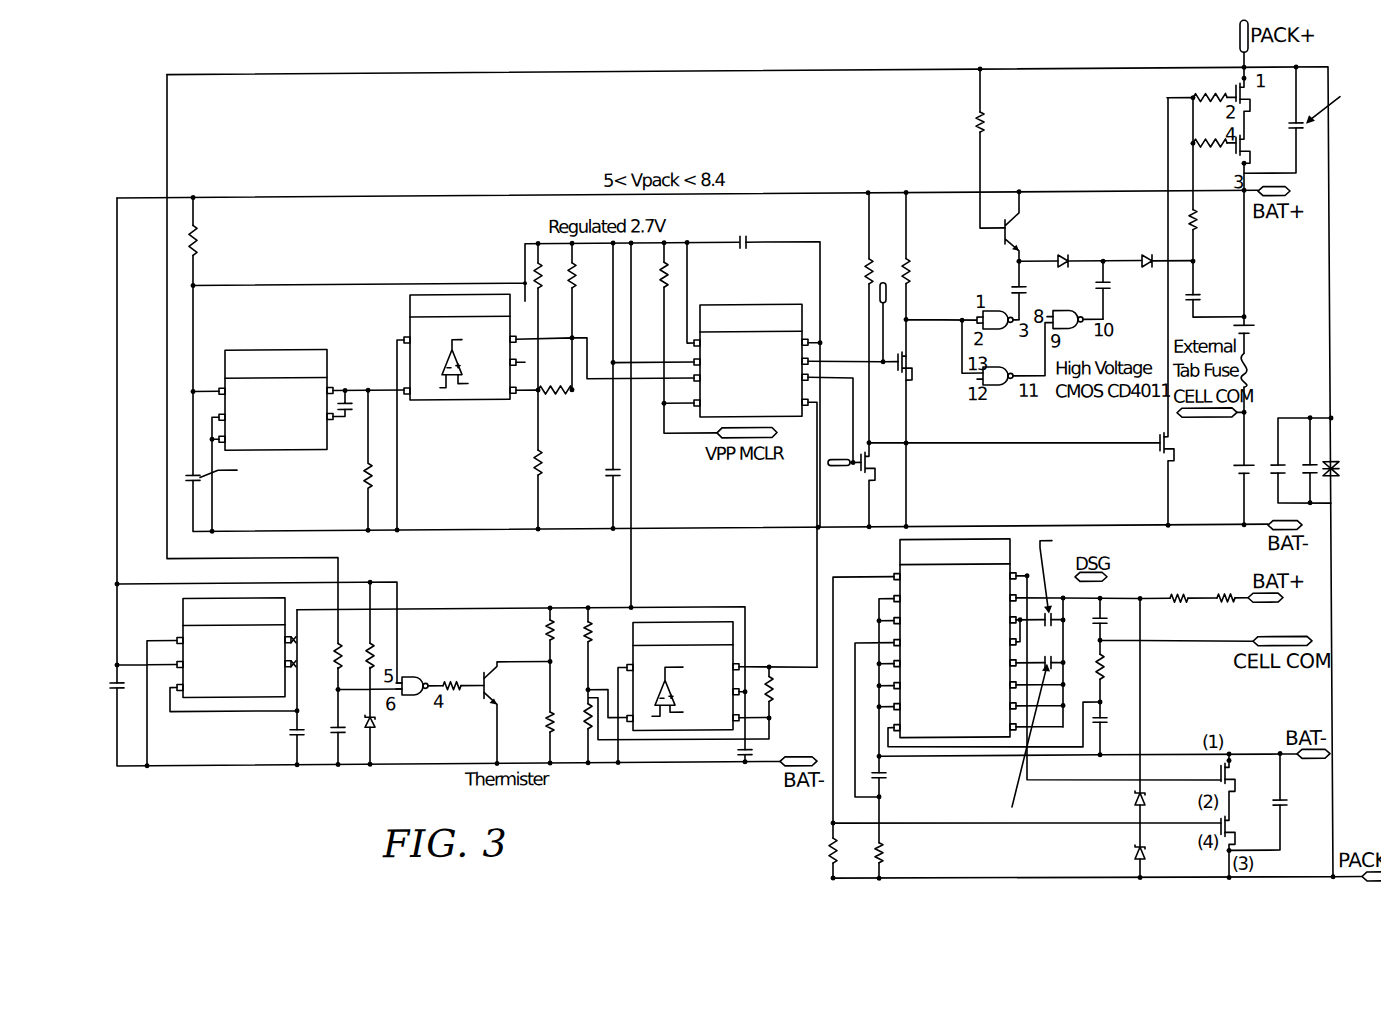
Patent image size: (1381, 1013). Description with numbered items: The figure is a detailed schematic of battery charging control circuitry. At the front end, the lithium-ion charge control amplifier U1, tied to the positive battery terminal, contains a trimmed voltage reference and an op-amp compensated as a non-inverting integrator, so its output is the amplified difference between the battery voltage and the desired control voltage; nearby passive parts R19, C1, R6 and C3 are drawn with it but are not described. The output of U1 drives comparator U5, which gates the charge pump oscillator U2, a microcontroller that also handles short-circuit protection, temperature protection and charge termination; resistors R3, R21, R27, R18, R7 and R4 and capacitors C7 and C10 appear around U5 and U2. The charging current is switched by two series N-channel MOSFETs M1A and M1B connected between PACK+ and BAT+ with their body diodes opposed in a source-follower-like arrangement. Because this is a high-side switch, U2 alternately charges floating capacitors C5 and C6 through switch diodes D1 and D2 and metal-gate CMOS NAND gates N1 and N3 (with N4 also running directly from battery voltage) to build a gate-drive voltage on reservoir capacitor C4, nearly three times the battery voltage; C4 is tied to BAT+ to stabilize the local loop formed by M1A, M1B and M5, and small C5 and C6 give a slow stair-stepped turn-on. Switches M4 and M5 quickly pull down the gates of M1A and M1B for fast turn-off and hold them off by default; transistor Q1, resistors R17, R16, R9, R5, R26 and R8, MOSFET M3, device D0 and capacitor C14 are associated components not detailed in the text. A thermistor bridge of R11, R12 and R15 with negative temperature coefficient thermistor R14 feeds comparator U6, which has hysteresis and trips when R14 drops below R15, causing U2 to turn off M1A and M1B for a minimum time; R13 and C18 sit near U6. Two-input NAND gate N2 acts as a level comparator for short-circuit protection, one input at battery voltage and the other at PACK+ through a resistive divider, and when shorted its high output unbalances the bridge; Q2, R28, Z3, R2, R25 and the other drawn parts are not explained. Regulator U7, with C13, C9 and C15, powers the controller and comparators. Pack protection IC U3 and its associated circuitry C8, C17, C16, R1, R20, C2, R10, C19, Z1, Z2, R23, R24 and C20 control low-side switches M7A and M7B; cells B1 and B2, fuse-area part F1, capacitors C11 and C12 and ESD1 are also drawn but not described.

The resistor R19 100 ohm R19 is at (210, 238).
The charge control amplifier U1 is at (276, 385).
The capacitor C1 0.1uF C1 is at (349, 428).
The resistor R6 10K R6 is at (354, 460).
The capacitor C3 33uF C3 is at (232, 480).
The comparator U5 is at (449, 343).
The resistor R3 680K R3 is at (519, 262).
The resistor R21 100K R21 is at (548, 287).
The resistor R27 39K R27 is at (591, 282).
The resistor R18 100K R18 is at (650, 282).
The resistor R7 220K R7 is at (563, 411).
The resistor R4 330K R4 is at (519, 465).
The capacitor C7 330pF C7 is at (590, 475).
The capacitor C10 0.1uF C10 is at (750, 230).
The charge pump oscillator U2 is at (751, 348).
The resistor R17 1MEG R17 is at (853, 268).
The diode D0 is at (888, 311).
The resistor R16 1MEG R16 is at (930, 267).
The MOSFET M3 BSS138 M3 is at (930, 360).
The switch M4 is at (916, 484).
The switch diode D1 is at (965, 347).
The switch diode D2 is at (1150, 235).
The transistor Q1 2N3904 Q1 is at (1037, 226).
The resistor R9 1MEG R9 is at (1005, 120).
The floating capacitor C5 is at (1048, 290).
The floating capacitor C6 is at (1132, 290).
The NAND gate N1 is at (1001, 331).
The NAND gate N3 is at (1078, 331).
The NAND gate N4 is at (1015, 362).
The resistor R5 10K R5 is at (1204, 86).
The resistor R26 10K R26 is at (1210, 166).
The resistor R8 100K R8 is at (1215, 214).
The N-channel MOSFET M1A is at (1265, 108).
The N-channel MOSFET M1B is at (1264, 155).
The capacitor C14 0.1uF C14 is at (1335, 96).
The reservoir capacitor C4 is at (1222, 288).
The battery cell B1 ICR18650 B1 is at (1281, 326).
The fuse F1 Raychem F1 is at (1284, 372).
The switch M5 is at (1193, 474).
The battery cell B2 ICR18650 B2 is at (1217, 486).
The capacitor C11 1uF C11 is at (1267, 467).
The capacitor C12 1uF C12 is at (1300, 467).
The ESD suppressor ESD1 AVX ESD1 is at (1348, 469).
The regulator U7 is at (223, 645).
The capacitor C13 1uF C13 is at (104, 688).
The resistor R2 100K R2 is at (321, 655).
The resistor R25 1MEG R25 is at (362, 658).
The capacitor C9 1uF C9 is at (283, 736).
The capacitor C15 0.1uF C15 is at (325, 734).
The zener diode Z3 ZMM5238B Z3 is at (419, 738).
The two-input NAND gate N2 is at (412, 697).
The resistor R28 1MEG R28 is at (456, 664).
The transistor Q2 2N3904 Q2 is at (514, 685).
The resistor R11 is at (522, 637).
The negative temperature coefficient thermistor R14 is at (530, 734).
The resistor R12 is at (574, 639).
The resistor R15 is at (573, 721).
The comparator U6 is at (670, 671).
The resistor R13 1MEG R13 is at (792, 692).
The capacitor C18 0.1uF C18 is at (707, 754).
The pack protection IC U3 is at (944, 637).
The capacitor C8 0.001uF C8 is at (912, 780).
The capacitor C17 0.001uF C17 is at (980, 739).
The capacitor C16 0.1uF C16 is at (1087, 579).
The resistor R1 510K R1 is at (856, 850).
The resistor R20 200K R20 is at (901, 849).
The capacitor C2 0.1uF C2 is at (1087, 624).
The resistor R10 10K R10 is at (1118, 671).
The capacitor C19 0.1uF C19 is at (1122, 725).
The zener diode Z1 PTZ8.2A Z1 is at (1094, 800).
The zener diode Z2 PTZ8.2A Z2 is at (1091, 848).
The resistor R23 100 ohm R23 is at (1182, 589).
The resistor R24 100 ohm R24 is at (1232, 589).
The low side switch M7A is at (1250, 771).
The low side switch M7B is at (1258, 844).
The capacitor C20 0.1uF C20 is at (1303, 806).